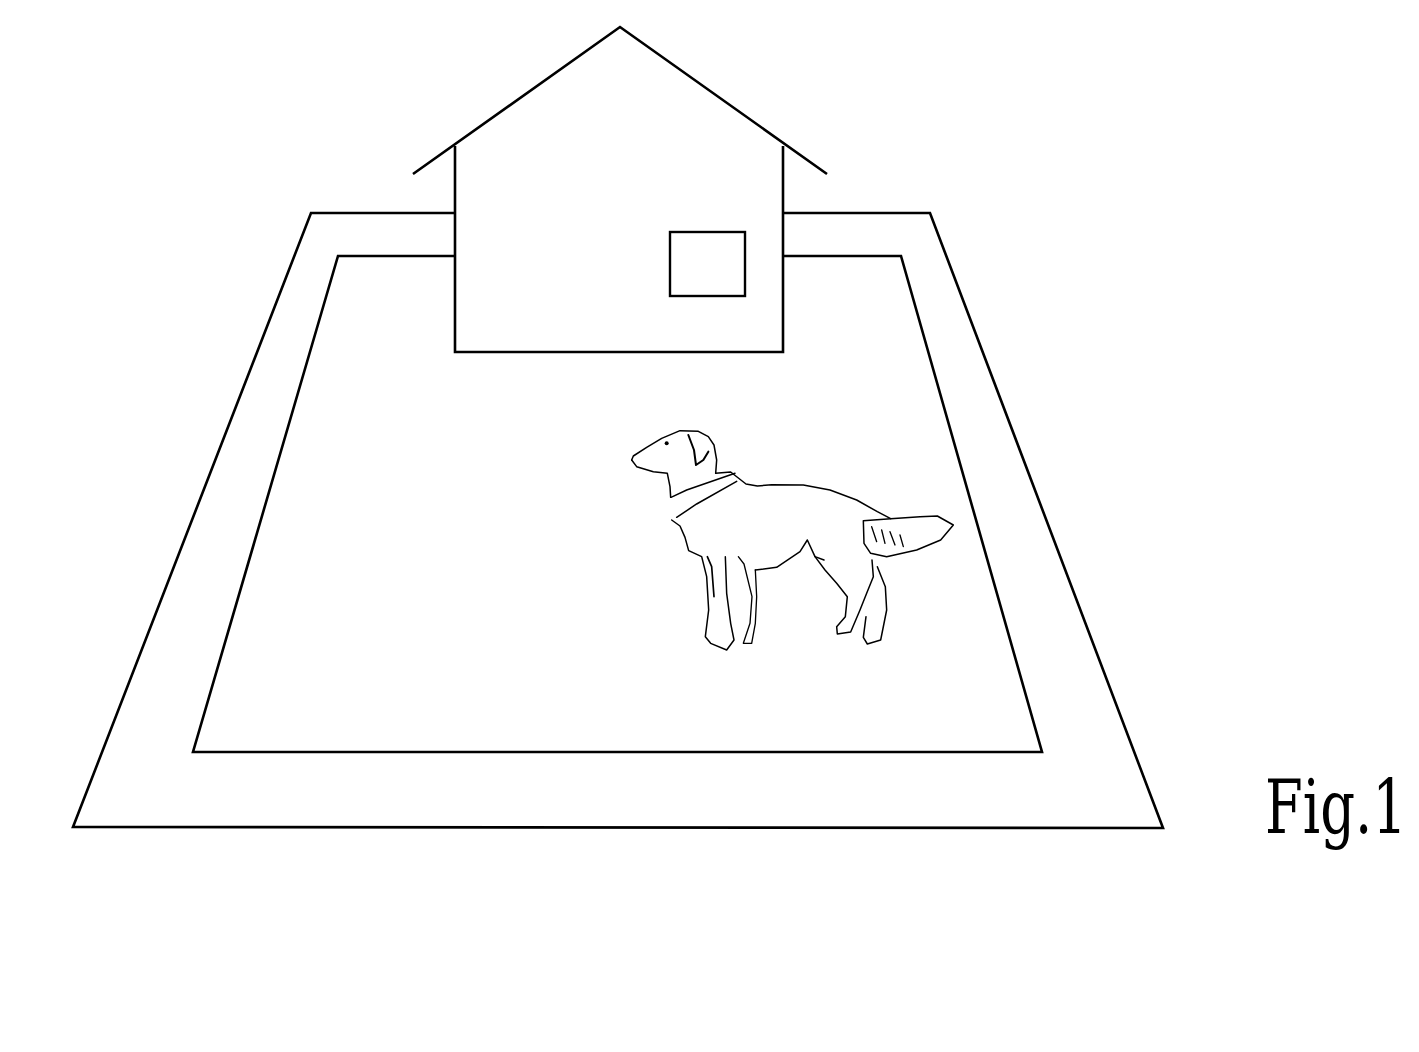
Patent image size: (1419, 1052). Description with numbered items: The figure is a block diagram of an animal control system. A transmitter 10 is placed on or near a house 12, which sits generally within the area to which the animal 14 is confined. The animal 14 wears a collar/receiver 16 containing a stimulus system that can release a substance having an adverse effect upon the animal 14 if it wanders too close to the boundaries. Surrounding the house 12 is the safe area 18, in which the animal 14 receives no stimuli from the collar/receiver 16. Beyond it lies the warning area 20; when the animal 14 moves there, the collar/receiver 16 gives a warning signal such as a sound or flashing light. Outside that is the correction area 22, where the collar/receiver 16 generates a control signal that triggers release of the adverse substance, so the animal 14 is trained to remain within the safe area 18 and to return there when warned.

The transmitter 10 is at (723, 282).
The house 12 is at (557, 255).
The animal 14 is at (783, 493).
The collar/receiver 16 is at (680, 523).
The safe area 18 is at (422, 600).
The warning area 20 is at (1080, 647).
The correction area 22 is at (1079, 317).